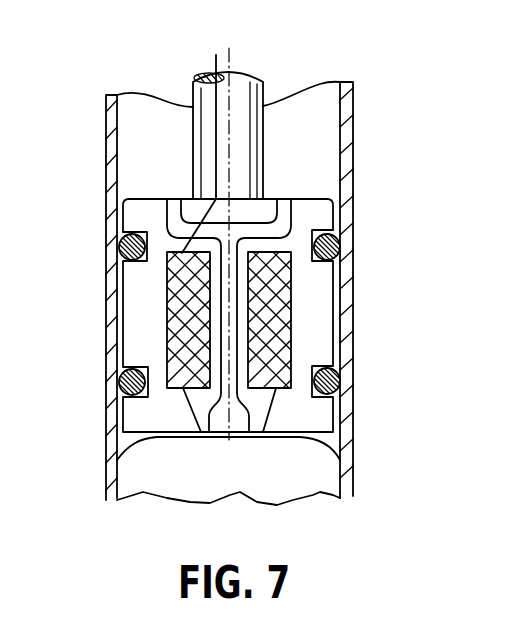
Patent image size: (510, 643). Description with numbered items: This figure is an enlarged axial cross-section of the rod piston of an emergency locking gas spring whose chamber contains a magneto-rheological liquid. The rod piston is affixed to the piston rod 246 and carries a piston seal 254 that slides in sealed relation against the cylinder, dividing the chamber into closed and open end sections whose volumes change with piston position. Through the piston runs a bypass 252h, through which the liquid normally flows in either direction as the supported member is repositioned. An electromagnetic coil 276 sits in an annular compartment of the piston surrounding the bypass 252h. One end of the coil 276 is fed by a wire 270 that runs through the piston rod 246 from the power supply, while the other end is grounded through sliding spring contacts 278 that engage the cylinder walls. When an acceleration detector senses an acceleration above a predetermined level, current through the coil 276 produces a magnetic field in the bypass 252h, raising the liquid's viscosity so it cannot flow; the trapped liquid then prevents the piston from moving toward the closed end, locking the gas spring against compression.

The wire 270 is at (214, 63).
The piston rod 246 is at (264, 118).
The electromagnetic coil 276 is at (277, 264).
The piston seal 254 is at (338, 372).
The bypass 252h is at (229, 375).
The sliding spring contacts 278 is at (330, 445).